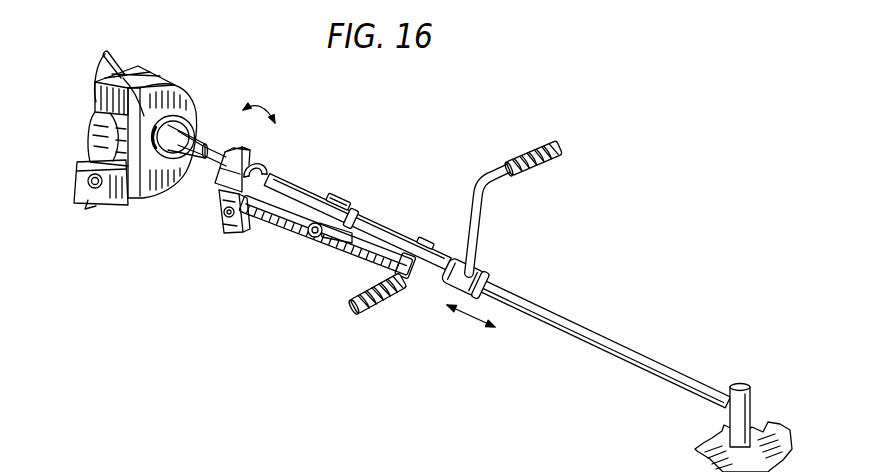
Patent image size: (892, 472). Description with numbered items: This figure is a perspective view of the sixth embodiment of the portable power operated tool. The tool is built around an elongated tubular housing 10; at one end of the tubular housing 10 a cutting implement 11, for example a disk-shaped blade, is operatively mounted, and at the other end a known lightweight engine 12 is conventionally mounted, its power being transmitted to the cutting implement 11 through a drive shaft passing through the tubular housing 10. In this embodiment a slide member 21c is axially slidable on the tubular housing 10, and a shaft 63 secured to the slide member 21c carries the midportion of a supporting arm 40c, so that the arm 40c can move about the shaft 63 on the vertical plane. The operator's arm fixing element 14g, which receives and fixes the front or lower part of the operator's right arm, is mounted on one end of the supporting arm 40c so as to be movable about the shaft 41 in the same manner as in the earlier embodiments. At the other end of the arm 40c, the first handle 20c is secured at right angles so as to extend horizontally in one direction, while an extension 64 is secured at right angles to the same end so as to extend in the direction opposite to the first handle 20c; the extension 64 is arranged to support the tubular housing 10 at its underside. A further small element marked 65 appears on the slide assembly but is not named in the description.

The engine 12 is at (97, 106).
The operator's arm fixing element 14g is at (250, 157).
The shaft 41 is at (219, 216).
The supporting arm 40c is at (345, 262).
The tubular housing 10 is at (572, 318).
The shaft 63 is at (307, 237).
The clamp block 65 is at (338, 207).
The slide member 21c is at (359, 214).
The extension 64 is at (426, 241).
The first handle 20c is at (380, 317).
The cutting implement 11 is at (700, 442).